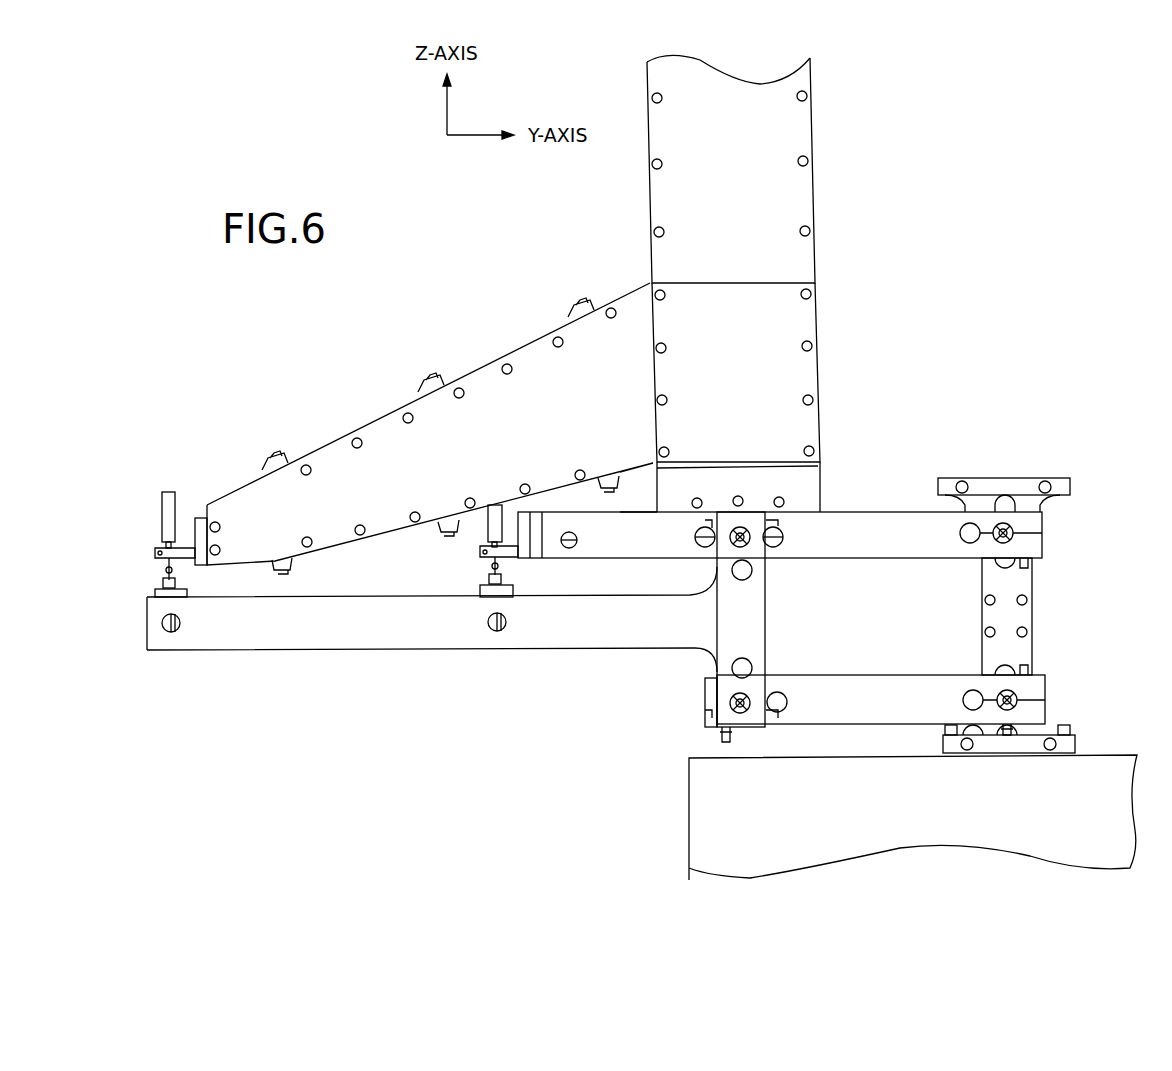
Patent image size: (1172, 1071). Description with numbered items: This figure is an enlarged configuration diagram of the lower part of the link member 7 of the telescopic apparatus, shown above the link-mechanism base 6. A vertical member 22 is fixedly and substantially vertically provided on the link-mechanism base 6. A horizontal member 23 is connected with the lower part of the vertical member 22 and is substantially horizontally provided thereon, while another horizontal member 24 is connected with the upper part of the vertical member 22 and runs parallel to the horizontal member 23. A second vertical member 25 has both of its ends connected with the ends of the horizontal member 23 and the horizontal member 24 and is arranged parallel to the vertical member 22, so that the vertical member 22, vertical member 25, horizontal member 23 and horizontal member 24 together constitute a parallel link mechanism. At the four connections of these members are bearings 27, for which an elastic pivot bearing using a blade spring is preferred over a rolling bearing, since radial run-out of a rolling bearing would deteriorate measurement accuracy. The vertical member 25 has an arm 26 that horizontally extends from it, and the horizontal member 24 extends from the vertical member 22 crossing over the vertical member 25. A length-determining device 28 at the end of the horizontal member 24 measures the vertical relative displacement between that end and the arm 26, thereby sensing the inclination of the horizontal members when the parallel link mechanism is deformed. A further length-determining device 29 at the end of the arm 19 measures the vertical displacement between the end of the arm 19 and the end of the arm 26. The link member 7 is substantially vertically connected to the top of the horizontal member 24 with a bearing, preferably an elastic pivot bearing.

The link-mechanism base 6 is at (689, 800).
The link member 7 is at (815, 135).
The arm 19 is at (487, 367).
The vertical member 22 is at (1032, 610).
The horizontal member 23 is at (885, 675).
The horizontal member 24 is at (890, 512).
The vertical member 25 is at (767, 610).
The arm 26 is at (430, 652).
The bearings 27 is at (750, 532).
The length-determining device 28 is at (485, 508).
The length-determining device 29 is at (164, 492).